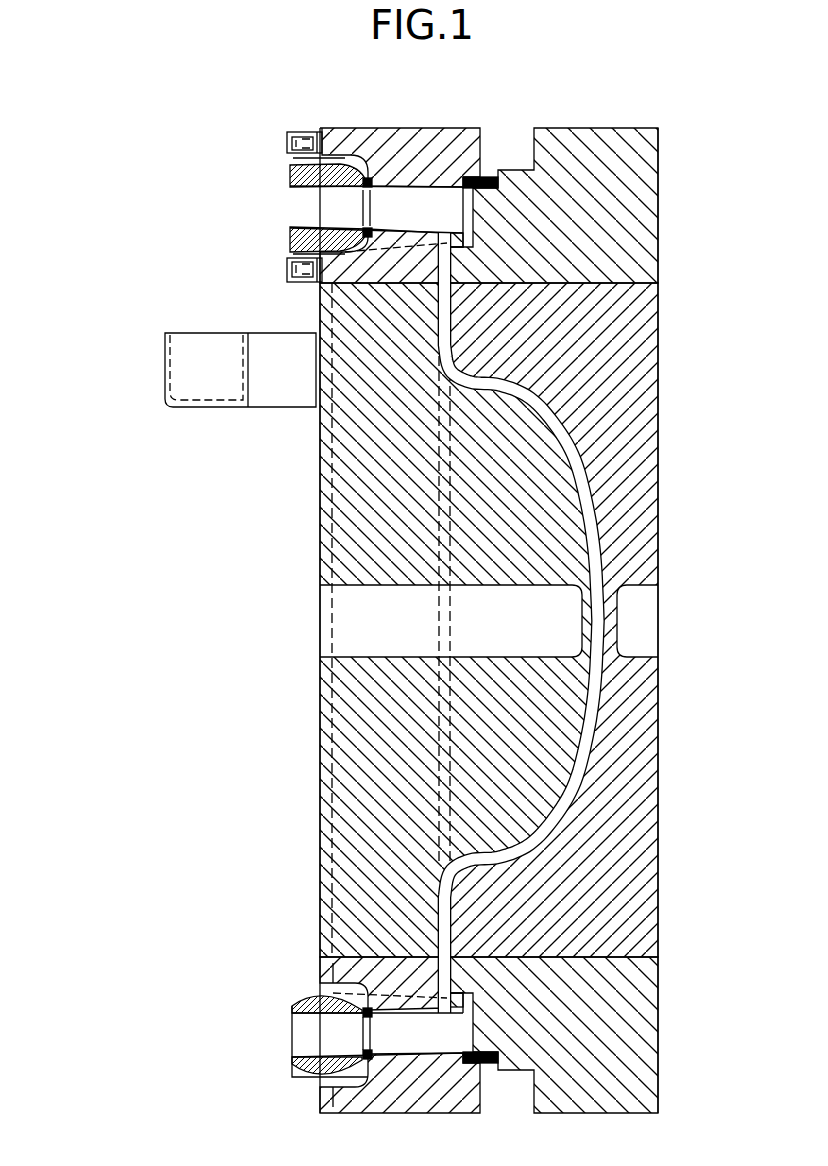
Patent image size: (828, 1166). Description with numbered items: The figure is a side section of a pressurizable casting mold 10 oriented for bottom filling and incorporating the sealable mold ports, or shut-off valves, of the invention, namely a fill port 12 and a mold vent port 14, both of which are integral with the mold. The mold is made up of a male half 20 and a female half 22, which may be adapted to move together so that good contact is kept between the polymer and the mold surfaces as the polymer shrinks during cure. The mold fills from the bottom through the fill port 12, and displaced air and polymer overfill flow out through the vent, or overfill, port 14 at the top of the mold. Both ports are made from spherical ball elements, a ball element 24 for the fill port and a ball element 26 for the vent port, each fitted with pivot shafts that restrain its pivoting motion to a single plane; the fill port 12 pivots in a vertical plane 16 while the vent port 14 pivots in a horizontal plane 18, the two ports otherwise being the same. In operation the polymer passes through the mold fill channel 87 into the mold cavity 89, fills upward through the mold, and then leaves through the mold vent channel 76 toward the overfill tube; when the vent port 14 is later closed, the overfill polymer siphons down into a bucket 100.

The pressurizable casting mold 10 is at (272, 698).
The fill port 12 is at (268, 1082).
The mold vent port 14 is at (228, 160).
The vertical plane 16 is at (262, 1005).
The horizontal plane 18 is at (273, 221).
The male half 20 is at (322, 456).
The female half 22 is at (660, 457).
The spherical ball element 24 is at (318, 992).
The spherical ball element 26 is at (296, 259).
The mold vent channel 76 is at (433, 197).
The mold fill channel 87 is at (438, 1040).
The mold cavity 89 is at (446, 925).
The bucket 100 is at (165, 360).